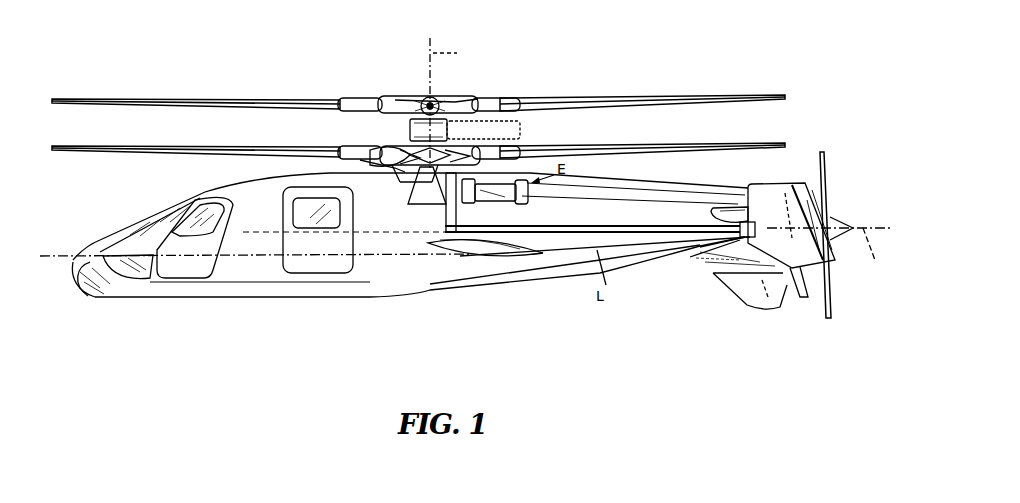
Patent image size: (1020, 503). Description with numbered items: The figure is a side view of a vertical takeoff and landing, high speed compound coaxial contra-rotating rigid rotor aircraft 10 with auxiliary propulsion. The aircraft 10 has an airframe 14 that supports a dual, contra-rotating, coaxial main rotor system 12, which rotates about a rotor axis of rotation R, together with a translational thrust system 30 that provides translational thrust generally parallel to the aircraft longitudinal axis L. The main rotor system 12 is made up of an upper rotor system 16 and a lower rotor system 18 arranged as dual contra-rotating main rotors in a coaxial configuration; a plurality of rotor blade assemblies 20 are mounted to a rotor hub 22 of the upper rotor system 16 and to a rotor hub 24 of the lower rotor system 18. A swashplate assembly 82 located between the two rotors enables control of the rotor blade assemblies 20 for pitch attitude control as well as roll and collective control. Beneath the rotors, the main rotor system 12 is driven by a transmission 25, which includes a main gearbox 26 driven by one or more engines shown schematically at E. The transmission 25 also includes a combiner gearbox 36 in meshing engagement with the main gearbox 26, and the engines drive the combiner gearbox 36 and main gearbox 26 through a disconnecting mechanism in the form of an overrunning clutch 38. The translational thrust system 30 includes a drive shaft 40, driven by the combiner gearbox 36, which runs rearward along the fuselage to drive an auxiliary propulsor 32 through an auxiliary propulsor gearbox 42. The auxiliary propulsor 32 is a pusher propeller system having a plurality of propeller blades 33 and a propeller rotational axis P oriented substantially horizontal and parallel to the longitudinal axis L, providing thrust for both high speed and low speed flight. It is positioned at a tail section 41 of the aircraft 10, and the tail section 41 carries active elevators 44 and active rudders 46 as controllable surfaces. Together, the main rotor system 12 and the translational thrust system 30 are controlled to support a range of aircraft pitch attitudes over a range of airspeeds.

The rotary wing aircraft 10 is at (158, 72).
The main rotor system 12 is at (481, 80).
The airframe 14 is at (93, 252).
The upper rotor system 16 is at (393, 97).
The lower rotor system 18 is at (398, 152).
The rotor blade assemblies 20 is at (660, 98).
The rotor hub 22 is at (412, 96).
The rotor hub 24 is at (408, 148).
The transmission 25 is at (402, 234).
The main gearbox 26 is at (407, 202).
The translational thrust system 30 is at (729, 146).
The auxiliary propulsor 32 is at (829, 316).
The propeller blades 33 is at (827, 172).
The combiner gearbox 36 is at (445, 205).
The overrunning clutch 38 is at (462, 205).
The drive shaft 40 is at (607, 227).
The tail section 41 is at (723, 318).
The auxiliary propulsor gearbox 42 is at (740, 240).
The active elevators 44 is at (745, 207).
The active rudders 46 is at (795, 262).
The swashplate assembly 82 is at (520, 130).